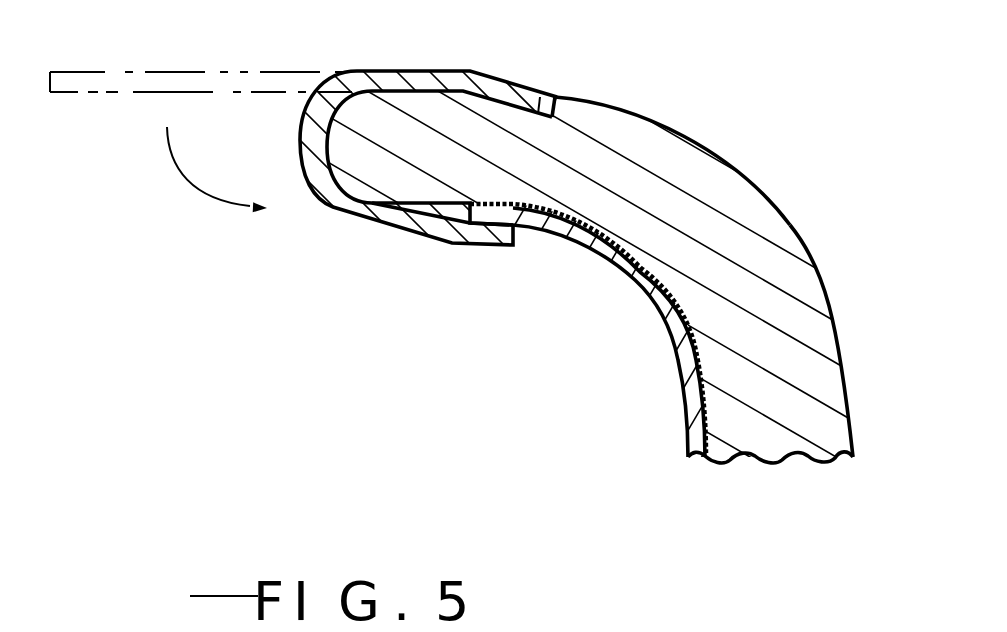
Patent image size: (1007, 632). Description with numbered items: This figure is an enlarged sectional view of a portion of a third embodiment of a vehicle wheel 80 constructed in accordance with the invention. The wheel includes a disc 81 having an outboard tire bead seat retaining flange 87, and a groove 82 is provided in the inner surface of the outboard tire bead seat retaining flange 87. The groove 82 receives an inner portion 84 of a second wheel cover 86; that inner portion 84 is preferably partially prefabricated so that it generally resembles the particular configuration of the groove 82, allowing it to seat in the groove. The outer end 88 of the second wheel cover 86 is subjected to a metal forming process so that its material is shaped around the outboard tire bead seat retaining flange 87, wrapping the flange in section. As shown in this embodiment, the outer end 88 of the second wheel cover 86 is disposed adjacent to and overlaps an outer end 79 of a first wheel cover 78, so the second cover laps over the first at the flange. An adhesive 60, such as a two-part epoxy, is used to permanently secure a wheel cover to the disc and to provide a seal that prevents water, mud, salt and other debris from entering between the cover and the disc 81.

The adhesive 60 is at (708, 460).
The first wheel cover 78 is at (680, 411).
The outer end of the first wheel cover 79 is at (480, 219).
The vehicle wheel 80 is at (838, 266).
The disc 81 is at (858, 403).
The groove 82 is at (541, 100).
The inner portion of the second wheel cover 84 is at (498, 95).
The second wheel cover 86 is at (332, 220).
The outboard tire bead seat retaining flange 87 is at (764, 219).
The outer end of the second wheel cover 88 is at (73, 97).